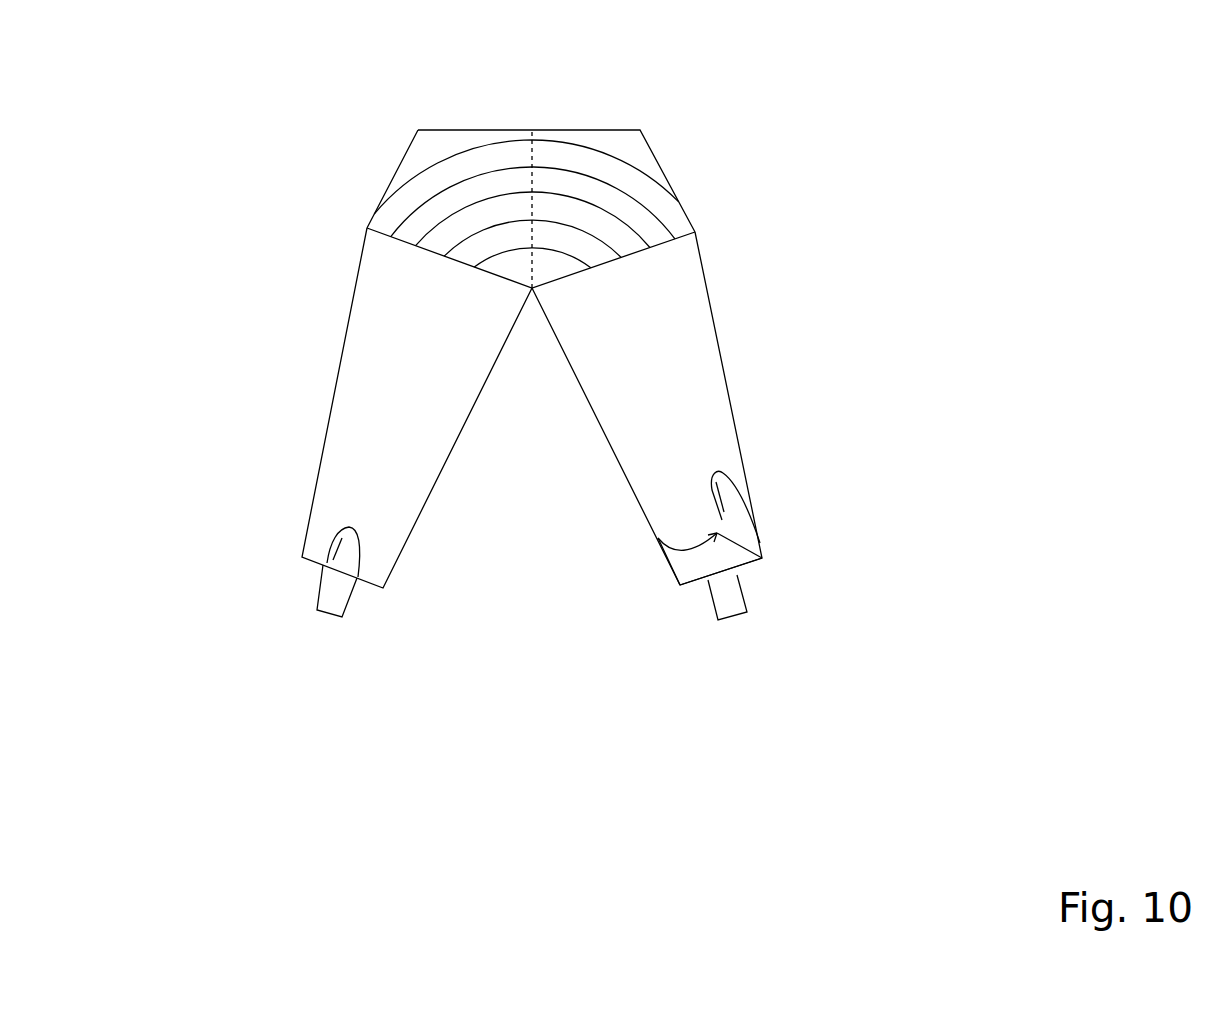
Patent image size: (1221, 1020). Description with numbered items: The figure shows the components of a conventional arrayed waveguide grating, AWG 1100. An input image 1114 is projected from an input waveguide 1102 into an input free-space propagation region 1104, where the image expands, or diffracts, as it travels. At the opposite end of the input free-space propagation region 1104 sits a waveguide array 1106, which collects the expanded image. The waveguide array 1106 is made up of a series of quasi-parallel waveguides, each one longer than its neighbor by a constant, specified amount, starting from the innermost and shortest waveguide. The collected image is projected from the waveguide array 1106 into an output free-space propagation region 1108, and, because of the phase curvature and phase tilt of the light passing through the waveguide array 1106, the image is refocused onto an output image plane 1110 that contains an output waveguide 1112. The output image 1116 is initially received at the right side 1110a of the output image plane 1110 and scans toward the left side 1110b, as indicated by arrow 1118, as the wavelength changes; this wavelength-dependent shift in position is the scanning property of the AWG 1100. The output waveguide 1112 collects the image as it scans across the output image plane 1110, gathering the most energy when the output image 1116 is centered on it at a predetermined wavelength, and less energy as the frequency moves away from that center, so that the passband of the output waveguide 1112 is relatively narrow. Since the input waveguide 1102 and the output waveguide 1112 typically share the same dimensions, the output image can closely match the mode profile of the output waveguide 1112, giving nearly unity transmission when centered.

The arrayed waveguide grating (AWG) 1100 is at (938, 203).
The input waveguide 1102 is at (317, 608).
The input free-space propagation region 1104 is at (363, 387).
The waveguide array 1106 is at (423, 155).
The output free-space propagation region 1108 is at (713, 365).
The output image plane 1110 is at (750, 565).
The right side of output image plane 1110a is at (753, 563).
The left side of output image plane 1110b is at (680, 585).
The output waveguide 1112 is at (717, 620).
The input image 1114 is at (343, 533).
The output image 1116 is at (732, 475).
The arrow 1118 is at (658, 538).